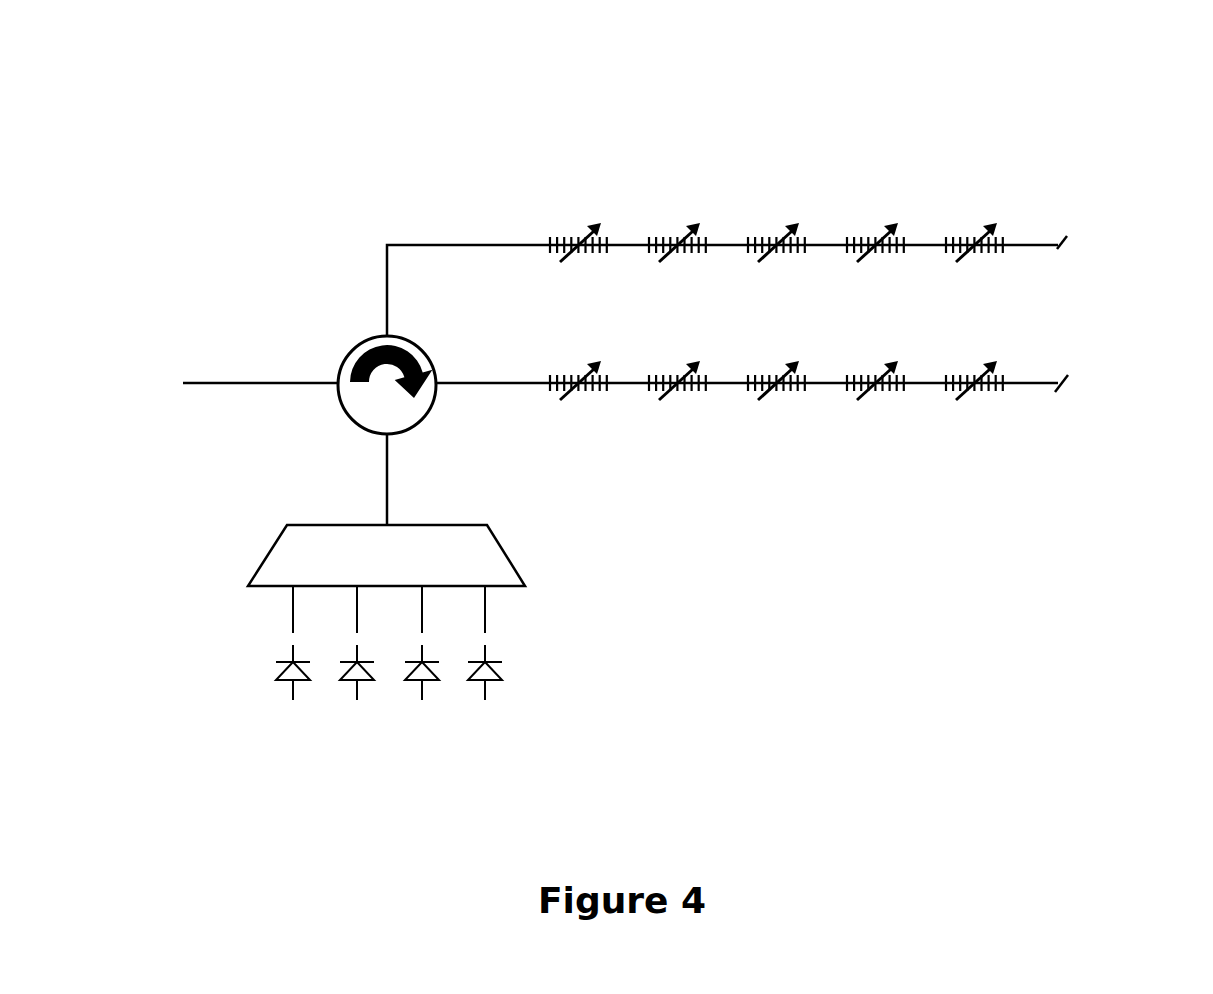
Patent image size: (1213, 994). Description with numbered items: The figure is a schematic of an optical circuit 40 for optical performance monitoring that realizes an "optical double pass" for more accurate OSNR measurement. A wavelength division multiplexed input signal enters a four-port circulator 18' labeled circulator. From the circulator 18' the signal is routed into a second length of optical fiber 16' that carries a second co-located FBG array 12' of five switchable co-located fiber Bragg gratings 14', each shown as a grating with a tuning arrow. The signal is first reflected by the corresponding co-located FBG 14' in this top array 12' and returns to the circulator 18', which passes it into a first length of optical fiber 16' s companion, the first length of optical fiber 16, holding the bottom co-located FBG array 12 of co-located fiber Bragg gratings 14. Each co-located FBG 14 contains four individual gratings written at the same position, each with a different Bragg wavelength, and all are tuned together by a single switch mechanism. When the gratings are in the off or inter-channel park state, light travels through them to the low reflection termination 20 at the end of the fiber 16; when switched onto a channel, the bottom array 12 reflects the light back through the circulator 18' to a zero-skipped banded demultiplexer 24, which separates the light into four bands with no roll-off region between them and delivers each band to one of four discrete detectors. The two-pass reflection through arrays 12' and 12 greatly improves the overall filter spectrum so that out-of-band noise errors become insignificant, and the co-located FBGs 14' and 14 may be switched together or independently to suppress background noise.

The optical circuit 40 is at (1066, 70).
The second co-located FBG array 12' is at (771, 195).
The co-located FBG array 12 is at (833, 420).
The co-located fiber Bragg grating 14' is at (771, 225).
The co-located fiber Bragg grating 14 is at (1031, 405).
The second length of optical fiber 16' is at (727, 247).
The first length of optical fiber 16 is at (747, 420).
The four-port circulator 18' is at (318, 375).
The low reflection termination 20 is at (1071, 386).
The banded demultiplexer 24 is at (247, 562).